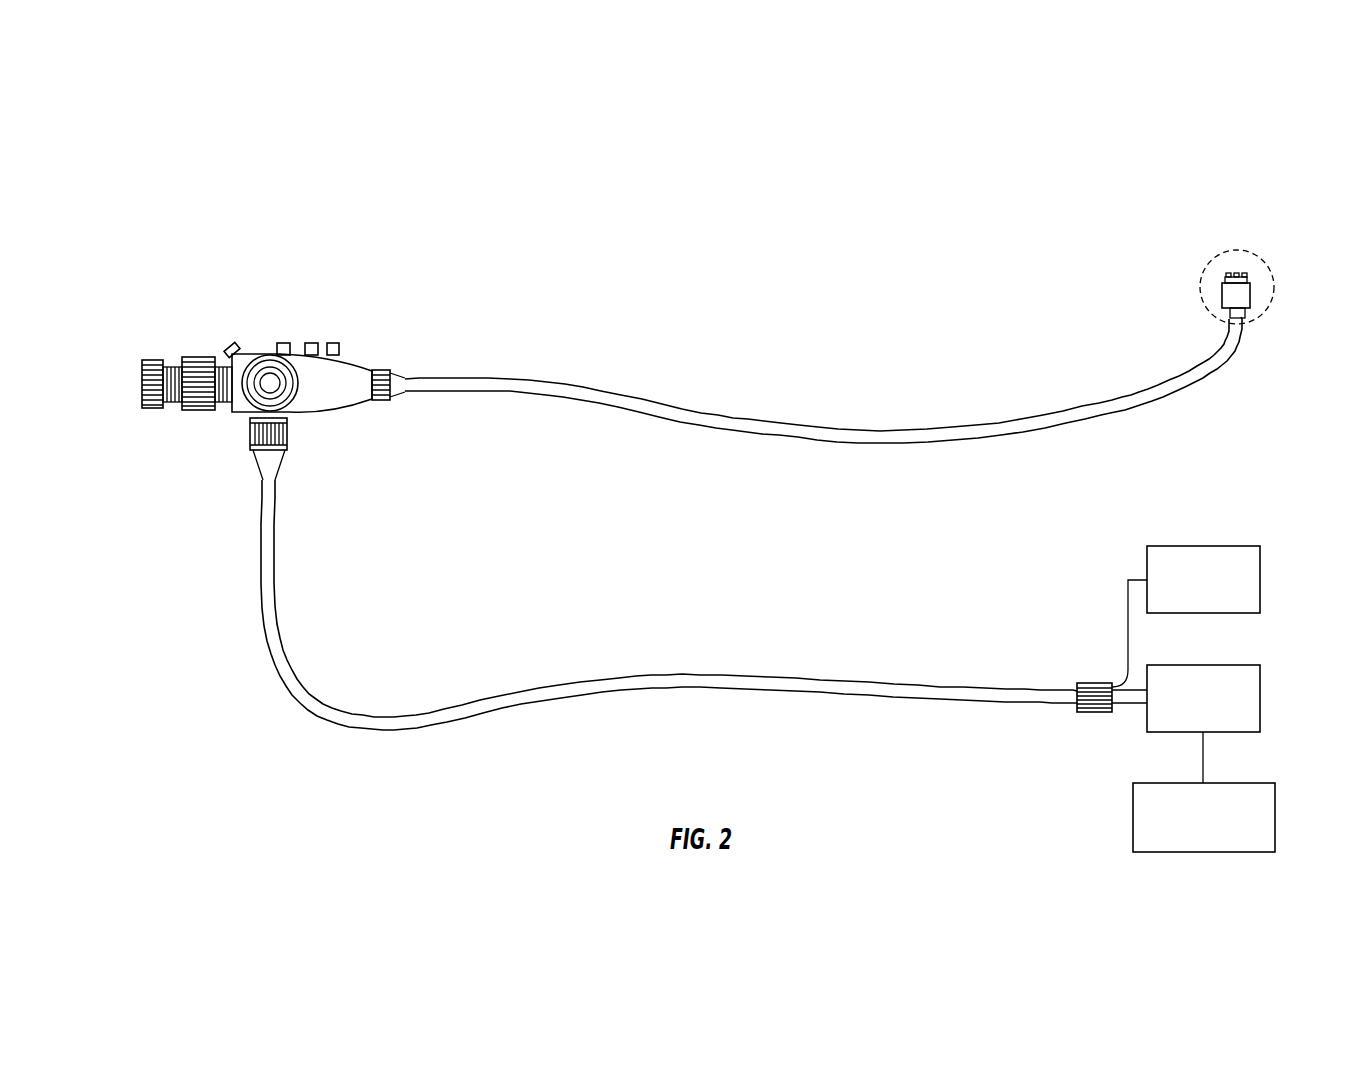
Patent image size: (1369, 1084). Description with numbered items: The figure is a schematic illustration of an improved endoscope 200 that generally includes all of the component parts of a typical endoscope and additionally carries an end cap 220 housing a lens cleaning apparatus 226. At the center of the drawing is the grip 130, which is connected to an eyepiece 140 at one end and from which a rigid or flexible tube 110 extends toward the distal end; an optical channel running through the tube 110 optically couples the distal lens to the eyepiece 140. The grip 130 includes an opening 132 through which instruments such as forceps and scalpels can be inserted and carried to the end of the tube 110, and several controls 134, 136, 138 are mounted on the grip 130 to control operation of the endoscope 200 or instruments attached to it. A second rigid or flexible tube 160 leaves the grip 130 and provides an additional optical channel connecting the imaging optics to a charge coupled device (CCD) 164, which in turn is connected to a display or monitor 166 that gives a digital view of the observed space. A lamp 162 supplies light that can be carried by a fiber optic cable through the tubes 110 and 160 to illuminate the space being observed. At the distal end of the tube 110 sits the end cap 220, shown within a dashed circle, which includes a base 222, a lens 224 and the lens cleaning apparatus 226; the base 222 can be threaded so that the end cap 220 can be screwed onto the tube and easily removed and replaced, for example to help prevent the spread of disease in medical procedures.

The improved endoscope 200 is at (368, 166).
The rigid or flexible tube 110 is at (741, 418).
The grip 130 is at (303, 413).
The opening 132 is at (226, 346).
The control 134 is at (284, 343).
The control 136 is at (311, 343).
The control 138 is at (333, 343).
The eyepiece 140 is at (142, 382).
The second rigid or flexible tube 160 is at (672, 675).
The lamp 162 is at (1207, 546).
The charge coupled device (CCD) 164 is at (1207, 665).
The display or monitor 166 is at (1192, 783).
The end cap 220 is at (1238, 250).
The base 222 is at (1225, 303).
The lens 224 is at (1222, 283).
The lens cleaning apparatus 226 is at (1255, 280).